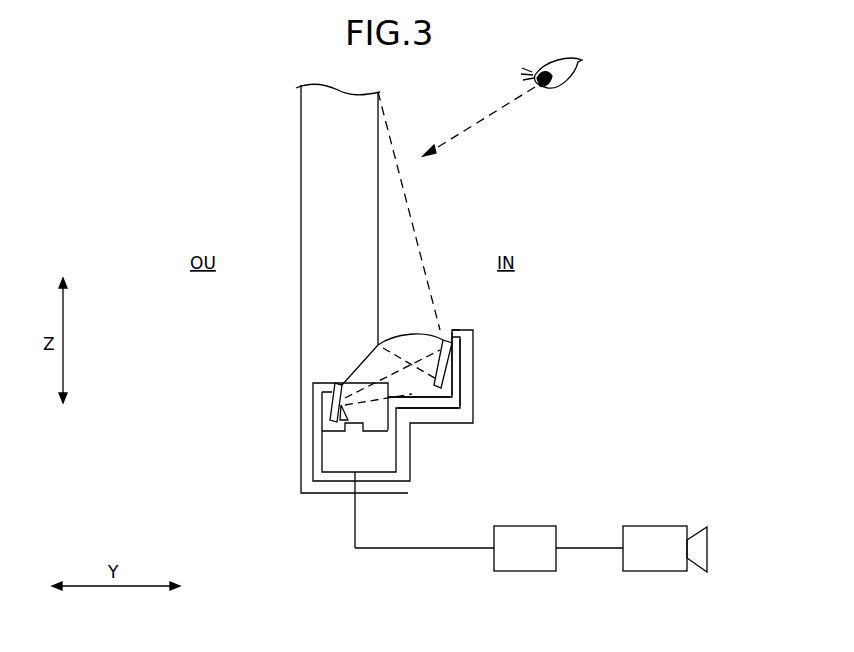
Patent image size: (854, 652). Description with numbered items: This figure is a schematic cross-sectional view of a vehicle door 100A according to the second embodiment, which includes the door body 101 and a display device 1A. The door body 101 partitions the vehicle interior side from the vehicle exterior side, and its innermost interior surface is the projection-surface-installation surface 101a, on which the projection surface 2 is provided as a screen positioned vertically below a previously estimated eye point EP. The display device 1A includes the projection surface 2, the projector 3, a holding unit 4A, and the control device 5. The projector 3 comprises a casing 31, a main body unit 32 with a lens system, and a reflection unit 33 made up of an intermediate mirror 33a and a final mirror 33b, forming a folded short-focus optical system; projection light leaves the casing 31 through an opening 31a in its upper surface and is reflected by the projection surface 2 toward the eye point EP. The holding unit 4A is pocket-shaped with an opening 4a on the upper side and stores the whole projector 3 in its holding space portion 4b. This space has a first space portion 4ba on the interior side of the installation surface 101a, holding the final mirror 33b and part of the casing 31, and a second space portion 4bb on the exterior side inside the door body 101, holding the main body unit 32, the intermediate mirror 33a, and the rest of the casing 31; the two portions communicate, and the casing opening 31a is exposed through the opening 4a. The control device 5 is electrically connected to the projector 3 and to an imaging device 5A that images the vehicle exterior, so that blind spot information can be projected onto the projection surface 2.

The door body 101 is at (292, 443).
The projection-surface-installation surface 101a is at (382, 96).
The projection surface 2 is at (388, 209).
The eye point EP is at (578, 80).
The holding unit 4A is at (434, 474).
The casing 31 is at (435, 425).
The main body unit 32 is at (370, 450).
The reflection unit 33 is at (562, 354).
The intermediate mirror 33a is at (448, 405).
The final mirror 33b is at (454, 352).
The projector 3 is at (603, 338).
The opening 31a is at (445, 325).
The opening 4a is at (452, 330).
The holding space portion 4b is at (203, 327).
The first space portion 4ba is at (378, 332).
The second space portion 4bb is at (333, 412).
The control device 5 is at (556, 531).
The imaging device 5A is at (707, 532).
The display device 1A is at (327, 507).
The vehicle door 100A is at (343, 580).